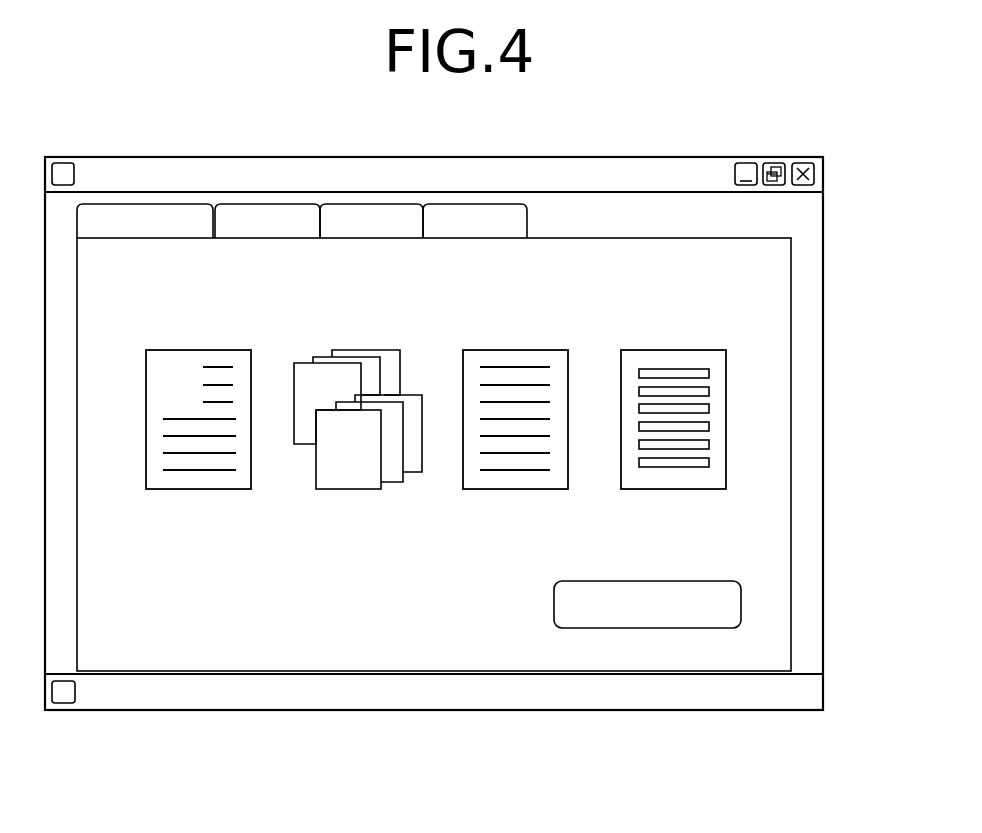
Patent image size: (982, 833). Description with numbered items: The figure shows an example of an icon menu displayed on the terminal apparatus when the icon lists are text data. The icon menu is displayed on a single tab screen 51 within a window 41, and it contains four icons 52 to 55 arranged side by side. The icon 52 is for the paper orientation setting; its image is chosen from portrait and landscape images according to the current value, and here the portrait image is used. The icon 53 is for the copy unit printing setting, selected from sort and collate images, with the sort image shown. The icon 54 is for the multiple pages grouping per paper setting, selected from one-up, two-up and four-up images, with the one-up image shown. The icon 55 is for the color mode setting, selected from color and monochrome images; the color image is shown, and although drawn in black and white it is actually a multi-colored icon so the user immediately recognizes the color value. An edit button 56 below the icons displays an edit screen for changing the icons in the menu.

The window 41 is at (826, 210).
The tab screen 51 is at (160, 204).
The icon for paper orientation setting 52 is at (199, 489).
The icon for copy unit printing setting 53 is at (351, 489).
The icon for multiple pages grouping per paper setting 54 is at (515, 489).
The icon for color mode setting 55 is at (676, 490).
The edit button 56 is at (627, 628).